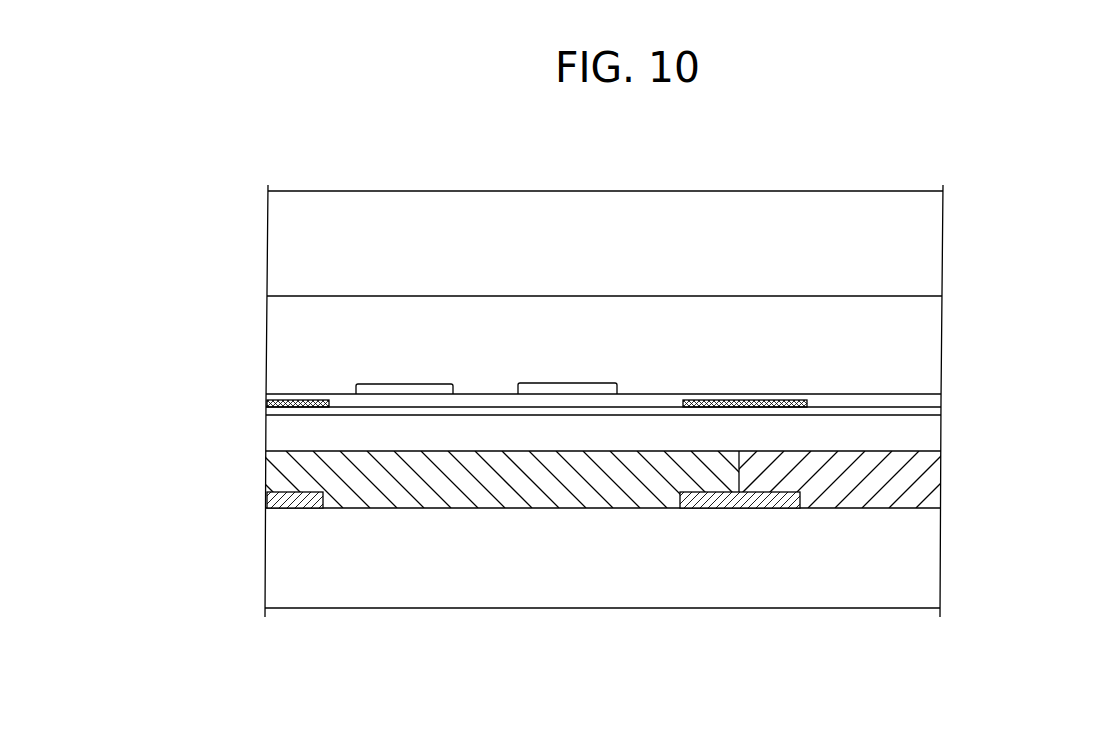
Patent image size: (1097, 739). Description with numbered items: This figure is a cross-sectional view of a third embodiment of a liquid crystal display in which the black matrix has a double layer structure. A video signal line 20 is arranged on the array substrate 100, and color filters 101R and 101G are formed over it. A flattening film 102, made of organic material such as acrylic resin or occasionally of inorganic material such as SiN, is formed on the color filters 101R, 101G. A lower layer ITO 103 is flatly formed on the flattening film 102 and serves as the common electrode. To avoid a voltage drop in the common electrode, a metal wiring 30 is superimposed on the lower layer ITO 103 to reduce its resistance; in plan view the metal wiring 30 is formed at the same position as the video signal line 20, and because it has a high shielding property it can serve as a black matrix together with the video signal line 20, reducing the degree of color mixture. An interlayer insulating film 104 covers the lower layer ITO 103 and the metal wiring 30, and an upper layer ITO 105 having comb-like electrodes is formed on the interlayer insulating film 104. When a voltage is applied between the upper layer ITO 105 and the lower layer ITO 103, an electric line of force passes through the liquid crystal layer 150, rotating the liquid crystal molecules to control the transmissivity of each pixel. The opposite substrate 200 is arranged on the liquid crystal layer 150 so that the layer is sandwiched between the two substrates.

The opposite substrate 200 is at (913, 247).
The liquid crystal layer 150 is at (913, 326).
The metal wiring 30 is at (767, 403).
The interlayer insulating film 104 is at (945, 399).
The lower layer ITO 103 is at (920, 418).
The flattening film 102 is at (925, 438).
The array substrate 100 is at (915, 565).
The color filter 101R is at (472, 483).
The color filter 101G is at (873, 485).
The video signal line 20 is at (760, 502).
The upper layer ITO 105 is at (408, 384).